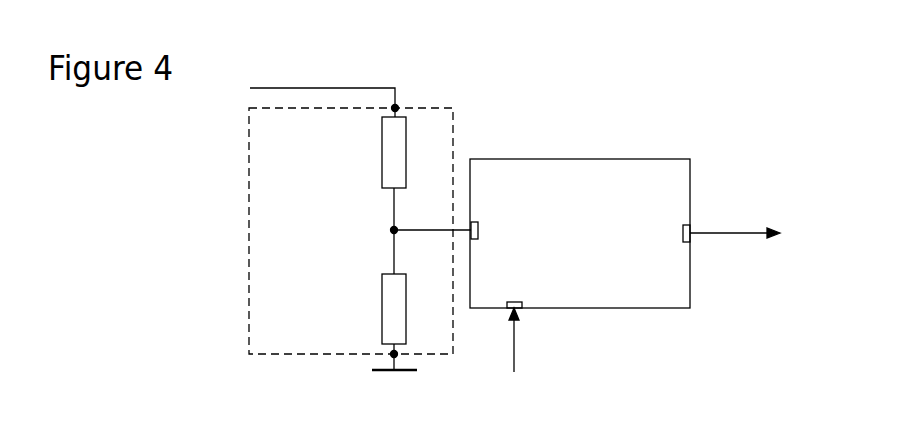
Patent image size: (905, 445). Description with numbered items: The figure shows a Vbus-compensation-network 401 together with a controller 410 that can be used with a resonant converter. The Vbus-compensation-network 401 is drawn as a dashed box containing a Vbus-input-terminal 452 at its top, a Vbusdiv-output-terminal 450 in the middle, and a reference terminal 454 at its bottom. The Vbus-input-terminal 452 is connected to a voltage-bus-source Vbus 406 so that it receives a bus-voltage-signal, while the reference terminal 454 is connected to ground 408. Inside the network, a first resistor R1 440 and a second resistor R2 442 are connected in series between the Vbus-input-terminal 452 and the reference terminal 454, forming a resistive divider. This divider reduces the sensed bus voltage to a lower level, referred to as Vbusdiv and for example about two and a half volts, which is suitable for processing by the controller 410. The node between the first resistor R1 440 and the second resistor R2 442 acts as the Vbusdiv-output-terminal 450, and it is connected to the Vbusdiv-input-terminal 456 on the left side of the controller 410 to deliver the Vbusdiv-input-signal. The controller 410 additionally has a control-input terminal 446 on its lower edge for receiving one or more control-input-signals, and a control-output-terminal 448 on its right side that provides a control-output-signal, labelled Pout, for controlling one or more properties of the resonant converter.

The Vbus-compensation-network 401 is at (247, 327).
The voltage-bus-source Vbus 406 is at (337, 88).
The Vbus-input-terminal 452 is at (397, 106).
The first resistor R1 440 is at (406, 149).
The Vbusdiv-output-terminal 450 is at (393, 230).
The second resistor R2 442 is at (383, 308).
The reference terminal 454 is at (392, 355).
The ground 408 is at (390, 372).
The controller 410 is at (582, 159).
The Vbusdiv-input-terminal 456 is at (475, 239).
The control-output-terminal 448 is at (683, 232).
The control-input terminal 446 is at (522, 304).